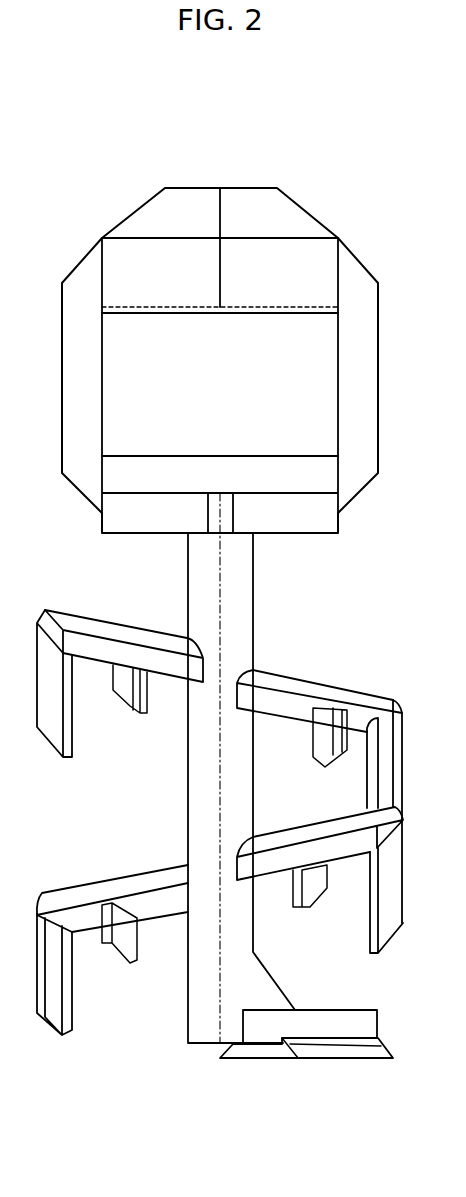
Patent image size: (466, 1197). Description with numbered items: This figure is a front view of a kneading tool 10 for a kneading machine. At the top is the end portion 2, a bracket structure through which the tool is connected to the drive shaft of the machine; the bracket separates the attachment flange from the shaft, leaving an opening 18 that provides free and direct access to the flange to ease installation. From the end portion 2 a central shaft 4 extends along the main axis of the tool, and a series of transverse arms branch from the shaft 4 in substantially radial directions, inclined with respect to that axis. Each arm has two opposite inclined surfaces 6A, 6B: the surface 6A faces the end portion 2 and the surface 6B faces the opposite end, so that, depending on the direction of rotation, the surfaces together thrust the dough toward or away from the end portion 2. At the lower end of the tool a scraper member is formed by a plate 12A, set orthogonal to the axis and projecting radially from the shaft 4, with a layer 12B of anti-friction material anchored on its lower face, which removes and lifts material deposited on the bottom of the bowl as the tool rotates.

The kneading tool 10 is at (92, 185).
The end portion 2 is at (388, 350).
The opening 18 is at (285, 382).
The central shaft 4 is at (200, 788).
The surface of arm 6A is at (102, 625).
The surface of arm 6B is at (285, 702).
The plate 12A is at (372, 1022).
The layer of anti-friction material 12B is at (378, 1048).